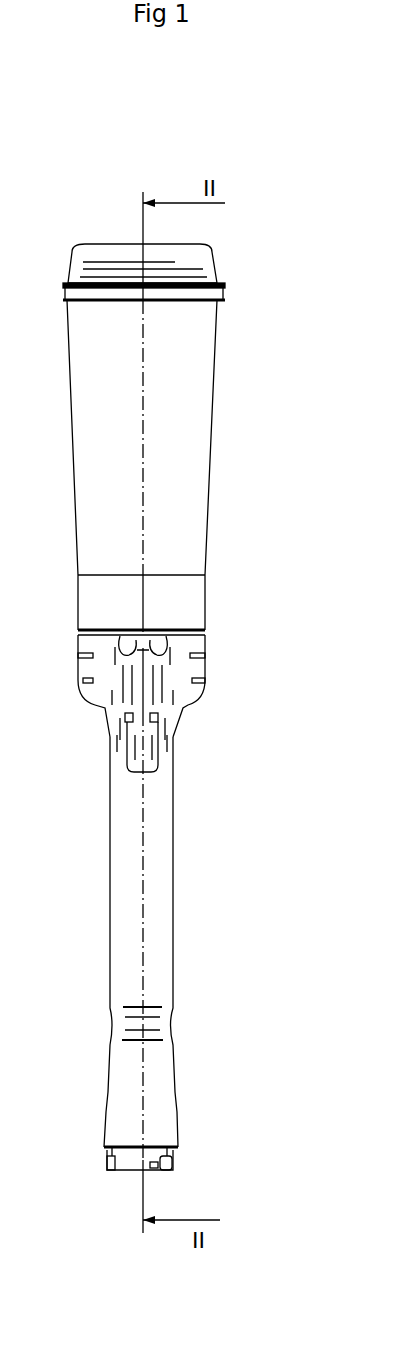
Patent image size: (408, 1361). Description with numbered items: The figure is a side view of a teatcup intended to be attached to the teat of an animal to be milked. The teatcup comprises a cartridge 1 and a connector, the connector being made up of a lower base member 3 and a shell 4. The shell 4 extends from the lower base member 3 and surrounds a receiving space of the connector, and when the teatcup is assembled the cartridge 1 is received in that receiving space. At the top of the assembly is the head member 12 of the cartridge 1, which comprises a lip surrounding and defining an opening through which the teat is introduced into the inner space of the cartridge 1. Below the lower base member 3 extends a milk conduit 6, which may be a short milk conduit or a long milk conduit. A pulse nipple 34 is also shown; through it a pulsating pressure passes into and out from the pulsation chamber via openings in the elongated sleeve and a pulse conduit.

The cartridge 1 is at (218, 343).
The head member 12 is at (215, 252).
The shell 4 is at (194, 452).
The lower base member 3 is at (185, 663).
The pulse nipple 34 is at (145, 765).
The milk conduit 6 is at (162, 878).